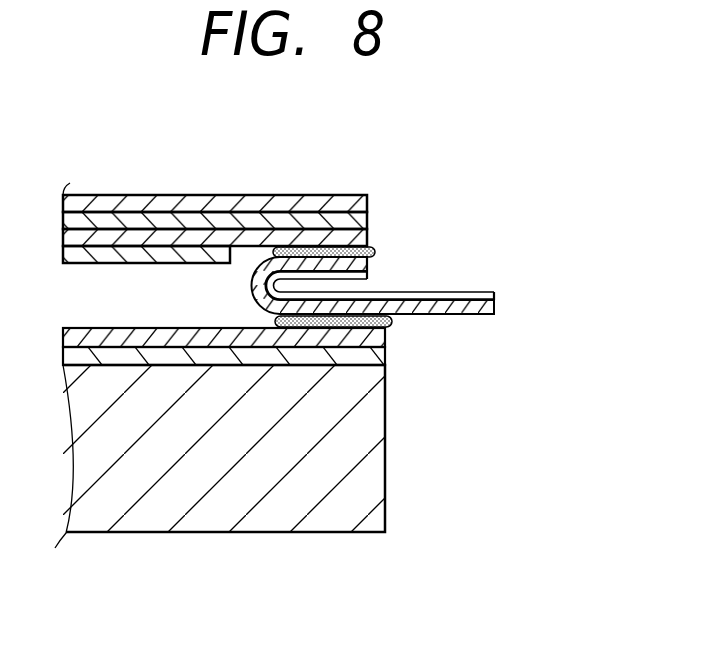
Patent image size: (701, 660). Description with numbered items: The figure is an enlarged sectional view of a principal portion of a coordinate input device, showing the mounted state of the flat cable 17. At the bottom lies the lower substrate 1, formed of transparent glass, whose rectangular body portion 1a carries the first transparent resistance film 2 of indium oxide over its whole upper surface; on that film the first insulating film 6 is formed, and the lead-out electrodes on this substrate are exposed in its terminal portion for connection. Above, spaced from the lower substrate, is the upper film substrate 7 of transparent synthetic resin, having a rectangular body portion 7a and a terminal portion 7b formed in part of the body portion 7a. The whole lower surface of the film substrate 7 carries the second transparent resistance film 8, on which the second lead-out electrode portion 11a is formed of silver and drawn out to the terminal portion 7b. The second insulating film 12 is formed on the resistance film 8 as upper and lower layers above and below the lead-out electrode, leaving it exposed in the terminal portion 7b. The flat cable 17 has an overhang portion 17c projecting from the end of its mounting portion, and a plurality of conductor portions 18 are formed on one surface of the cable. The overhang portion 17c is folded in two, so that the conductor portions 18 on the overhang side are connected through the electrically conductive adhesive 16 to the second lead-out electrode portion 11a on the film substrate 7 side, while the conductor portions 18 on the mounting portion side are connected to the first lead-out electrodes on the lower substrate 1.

The lower substrate 1 is at (208, 541).
The body portion 1a is at (335, 508).
The first transparent resistance film 2 is at (370, 353).
The first insulating film 6 is at (97, 328).
The upper film substrate 7 is at (249, 217).
The body portion 7a is at (108, 207).
The terminal portion 7b is at (295, 203).
The second transparent resistance film 8 is at (357, 220).
The second lead-out electrode portion 11a is at (360, 238).
The second insulating film 12 is at (77, 257).
The electrically conductive adhesive 16 is at (376, 255).
The flat cable 17 is at (422, 306).
The overhang portion 17c is at (368, 278).
The conductor portions 18 is at (482, 317).